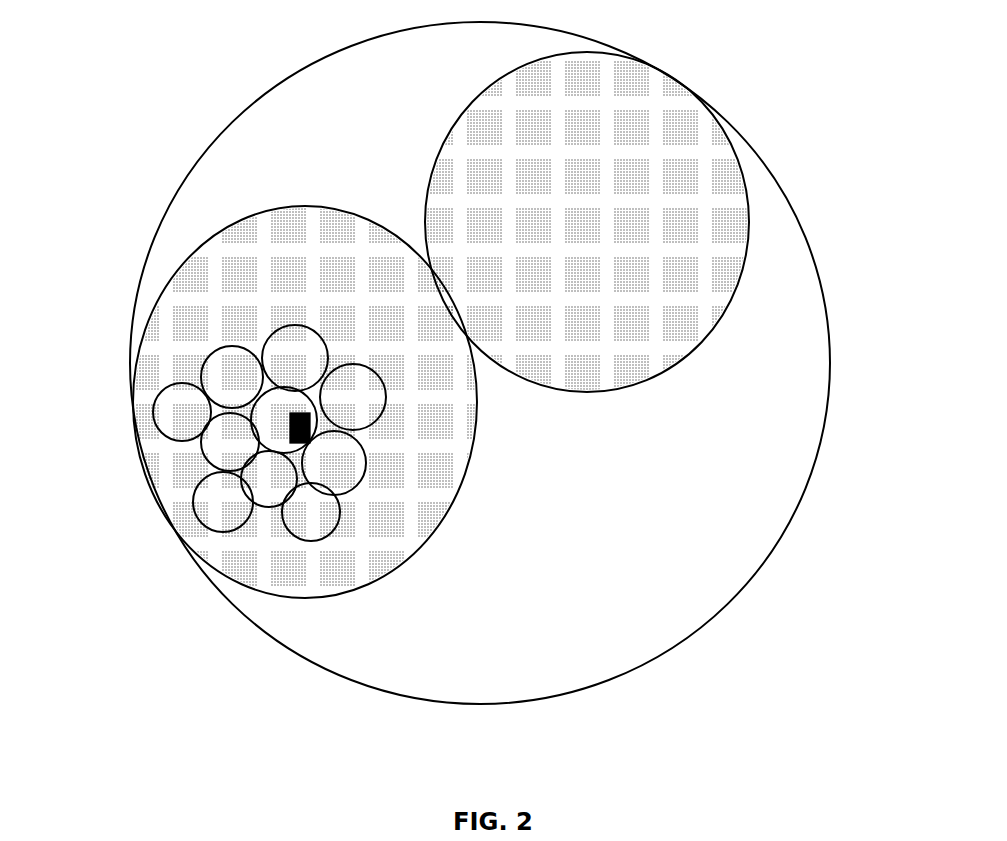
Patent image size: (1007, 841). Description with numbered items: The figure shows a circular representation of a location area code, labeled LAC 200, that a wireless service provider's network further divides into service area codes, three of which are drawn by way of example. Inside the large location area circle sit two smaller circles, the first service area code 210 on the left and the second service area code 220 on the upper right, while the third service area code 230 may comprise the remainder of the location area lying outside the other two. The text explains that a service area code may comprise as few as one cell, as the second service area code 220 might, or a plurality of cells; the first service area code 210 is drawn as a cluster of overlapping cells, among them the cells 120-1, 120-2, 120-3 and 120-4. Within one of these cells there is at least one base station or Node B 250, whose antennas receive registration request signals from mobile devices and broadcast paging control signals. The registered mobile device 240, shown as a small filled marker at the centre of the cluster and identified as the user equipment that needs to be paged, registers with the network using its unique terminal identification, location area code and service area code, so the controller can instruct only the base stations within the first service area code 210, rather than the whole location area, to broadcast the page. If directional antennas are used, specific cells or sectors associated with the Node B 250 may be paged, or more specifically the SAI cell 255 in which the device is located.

The location area code (LAC) 200 is at (340, 83).
The service area code SAC#1 210 is at (385, 578).
The service area code SAC#2 220 is at (678, 88).
The service area code SAC#3 230 is at (680, 473).
The mobile device UE#1 240 is at (318, 431).
The Node B base station 250 is at (370, 363).
The SAI cell 255 is at (268, 398).
The cell 120-1 is at (190, 510).
The cell 120-2 is at (265, 498).
The cell 120-3 is at (283, 528).
The cell 120-4 is at (352, 485).